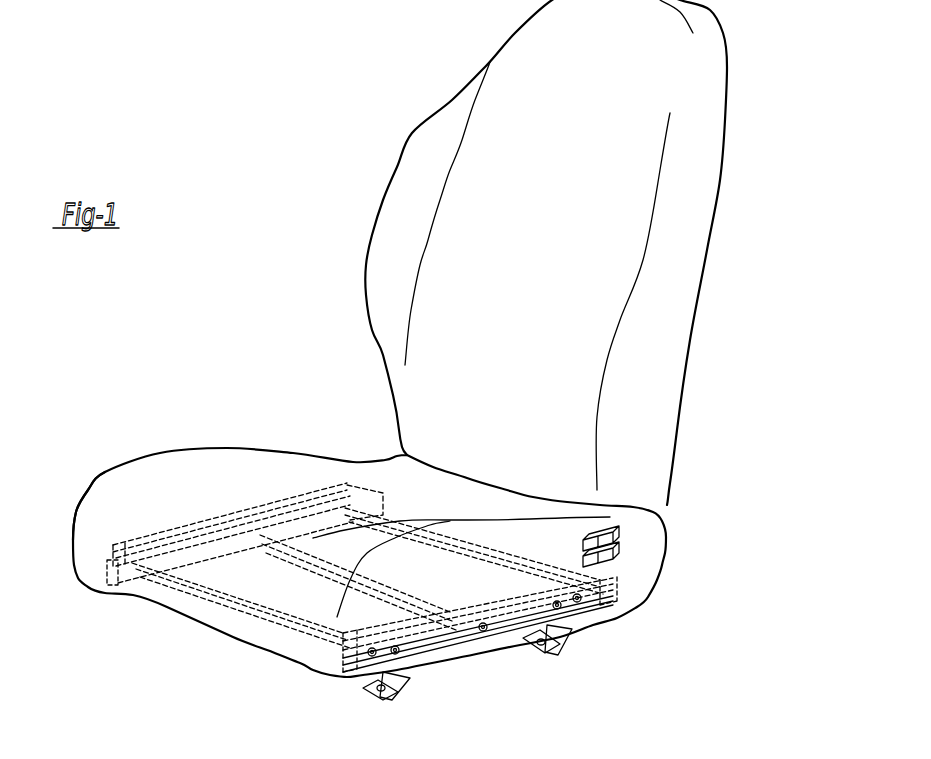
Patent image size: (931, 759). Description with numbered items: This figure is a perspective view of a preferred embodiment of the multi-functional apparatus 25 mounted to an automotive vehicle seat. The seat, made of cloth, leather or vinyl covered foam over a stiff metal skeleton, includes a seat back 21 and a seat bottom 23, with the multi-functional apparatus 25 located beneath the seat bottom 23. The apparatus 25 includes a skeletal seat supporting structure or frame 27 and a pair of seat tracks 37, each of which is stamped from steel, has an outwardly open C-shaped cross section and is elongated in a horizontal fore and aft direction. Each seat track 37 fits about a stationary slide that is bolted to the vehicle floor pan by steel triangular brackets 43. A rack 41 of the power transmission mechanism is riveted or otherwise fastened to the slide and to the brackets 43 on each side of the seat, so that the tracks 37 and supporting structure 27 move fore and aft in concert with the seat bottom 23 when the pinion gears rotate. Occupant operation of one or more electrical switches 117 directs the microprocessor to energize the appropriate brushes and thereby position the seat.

The seat back 21 is at (533, 180).
The seat bottom 23 is at (207, 480).
The multi-functional apparatus 25 is at (290, 686).
The skeletal seat supporting structure or frame 27 is at (147, 535).
The seat track 37 is at (343, 668).
The rack 41 is at (457, 628).
The triangular bracket 43 is at (398, 685).
The electrical switch 117 is at (593, 560).